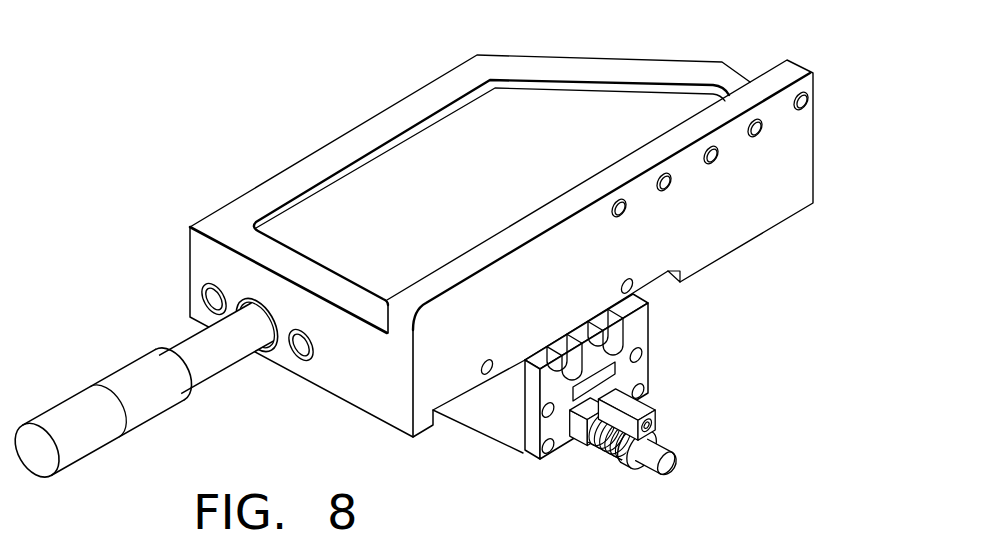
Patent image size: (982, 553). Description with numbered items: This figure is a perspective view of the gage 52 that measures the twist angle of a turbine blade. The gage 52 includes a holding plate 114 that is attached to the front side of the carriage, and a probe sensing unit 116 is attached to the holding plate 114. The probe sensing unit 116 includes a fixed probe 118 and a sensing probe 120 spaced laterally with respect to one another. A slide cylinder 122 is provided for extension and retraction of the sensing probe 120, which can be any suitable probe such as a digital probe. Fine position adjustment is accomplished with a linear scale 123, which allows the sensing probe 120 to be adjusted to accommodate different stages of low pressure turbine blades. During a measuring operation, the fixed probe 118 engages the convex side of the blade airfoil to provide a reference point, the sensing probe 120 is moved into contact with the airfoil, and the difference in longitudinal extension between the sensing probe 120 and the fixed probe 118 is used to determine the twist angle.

The gage 52 is at (850, 78).
The holding plate 114 is at (502, 110).
The probe sensing unit 116 is at (666, 337).
The fixed probe 118 is at (657, 412).
The sensing probe 120 is at (608, 463).
The slide cylinder 122 is at (503, 418).
The linear scale 123 is at (88, 447).